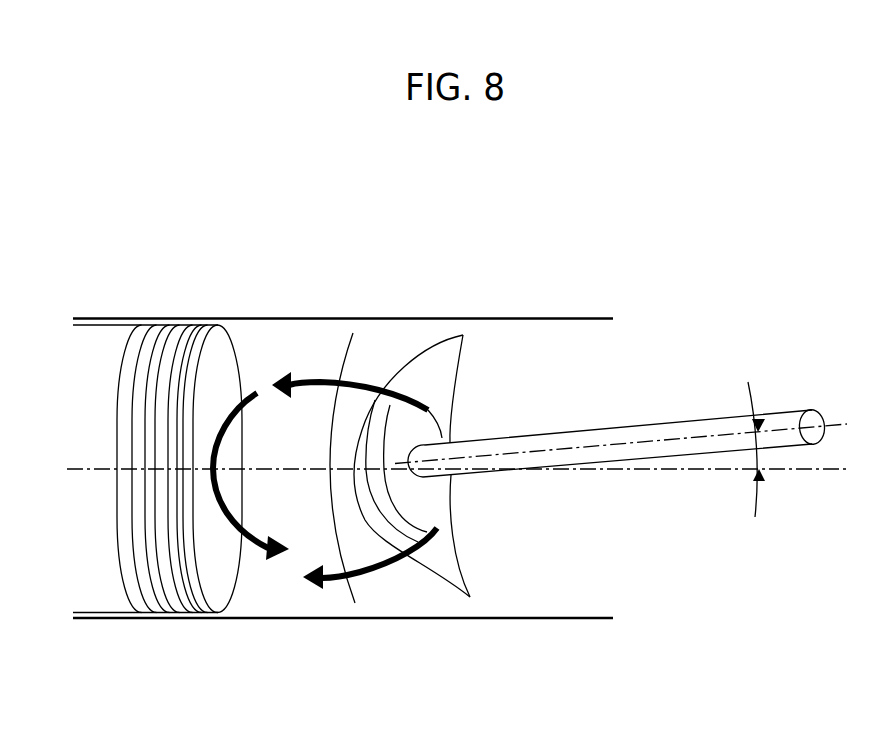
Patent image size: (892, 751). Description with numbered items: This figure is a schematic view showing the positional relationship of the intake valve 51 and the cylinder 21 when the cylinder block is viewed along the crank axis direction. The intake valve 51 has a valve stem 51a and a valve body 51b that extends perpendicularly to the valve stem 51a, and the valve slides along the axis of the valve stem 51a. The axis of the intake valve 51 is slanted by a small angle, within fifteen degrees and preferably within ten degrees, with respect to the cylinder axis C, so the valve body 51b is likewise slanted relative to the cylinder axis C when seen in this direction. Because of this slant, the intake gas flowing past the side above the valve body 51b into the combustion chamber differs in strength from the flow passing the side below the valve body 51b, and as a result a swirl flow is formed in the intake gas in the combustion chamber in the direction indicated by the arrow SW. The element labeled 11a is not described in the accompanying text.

The coil 11a is at (97, 347).
The cylinder 21 is at (275, 347).
The intake valve 51 is at (588, 418).
The valve stem 51a is at (585, 440).
The valve body 51b is at (420, 428).
The swirl flow SW is at (255, 548).
The cylinder axis C is at (73, 472).